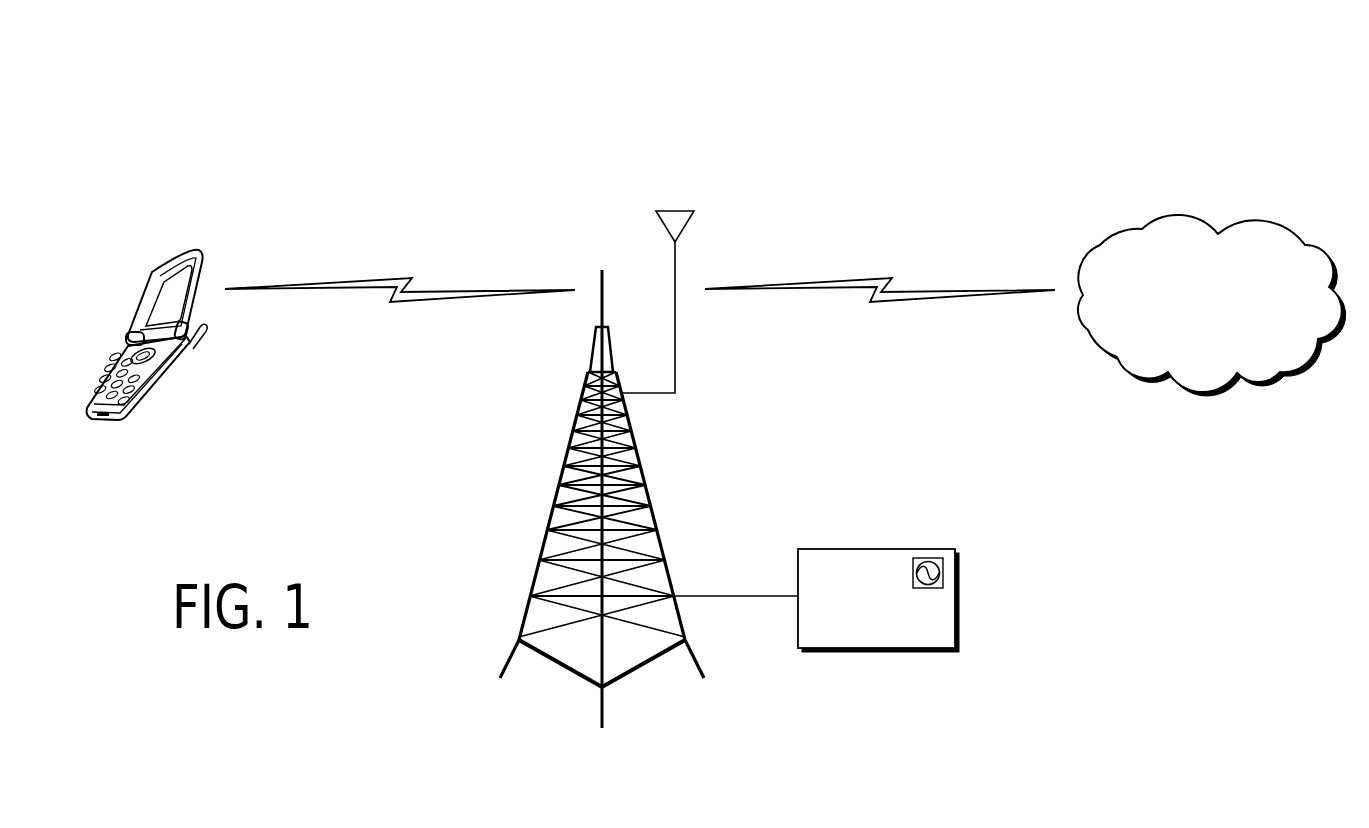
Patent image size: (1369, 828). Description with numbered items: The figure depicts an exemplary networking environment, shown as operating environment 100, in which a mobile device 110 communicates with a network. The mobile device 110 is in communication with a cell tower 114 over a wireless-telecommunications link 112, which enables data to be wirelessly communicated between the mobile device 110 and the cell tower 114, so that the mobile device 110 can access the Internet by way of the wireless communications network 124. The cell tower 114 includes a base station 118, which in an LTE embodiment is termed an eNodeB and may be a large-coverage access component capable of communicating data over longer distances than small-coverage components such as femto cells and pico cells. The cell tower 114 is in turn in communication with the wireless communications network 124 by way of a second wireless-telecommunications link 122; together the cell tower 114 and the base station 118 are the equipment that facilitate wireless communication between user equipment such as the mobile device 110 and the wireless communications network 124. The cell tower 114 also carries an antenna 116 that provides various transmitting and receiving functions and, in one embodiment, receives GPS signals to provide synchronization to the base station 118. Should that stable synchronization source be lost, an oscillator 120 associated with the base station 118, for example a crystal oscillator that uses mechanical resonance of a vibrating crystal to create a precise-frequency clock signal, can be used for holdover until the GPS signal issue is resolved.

The operating environment 100 is at (145, 123).
The mobile device 110 is at (150, 286).
The wireless-telecommunications link 112 is at (350, 280).
The cell tower 114 is at (526, 608).
The antenna 116 is at (677, 360).
The base station 118 is at (838, 549).
The oscillator 120 is at (929, 558).
The wireless-telecommunications link 122 is at (830, 280).
The wireless communications network 124 is at (1158, 215).